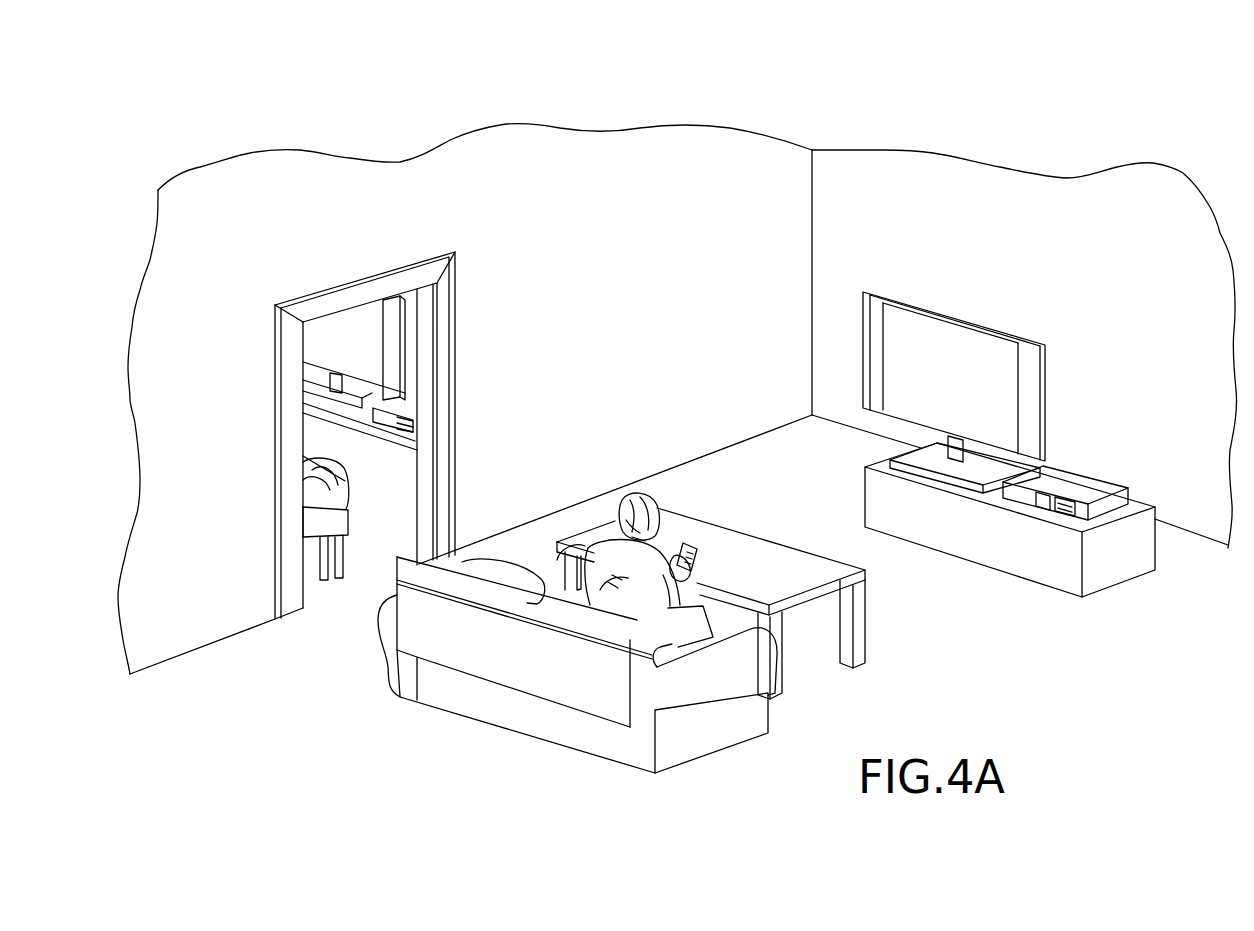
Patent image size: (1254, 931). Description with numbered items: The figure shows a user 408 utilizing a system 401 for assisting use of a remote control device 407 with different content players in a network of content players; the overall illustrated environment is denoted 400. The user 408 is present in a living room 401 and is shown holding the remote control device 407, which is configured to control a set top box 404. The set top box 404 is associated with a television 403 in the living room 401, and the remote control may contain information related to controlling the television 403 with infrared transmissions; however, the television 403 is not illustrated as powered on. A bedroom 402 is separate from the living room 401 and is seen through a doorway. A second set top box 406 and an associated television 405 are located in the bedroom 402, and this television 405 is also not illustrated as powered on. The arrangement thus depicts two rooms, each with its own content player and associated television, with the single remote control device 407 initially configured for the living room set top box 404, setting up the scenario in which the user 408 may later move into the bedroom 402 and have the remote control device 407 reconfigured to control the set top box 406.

The home environment 400 is at (918, 90).
The living room 401 is at (1145, 268).
The bedroom 402 is at (415, 500).
The television 403 is at (1045, 392).
The set top box 404 is at (1087, 475).
The television 405 is at (405, 327).
The set top box 406 is at (407, 401).
The remote control device 407 is at (694, 546).
The user 408 is at (628, 500).